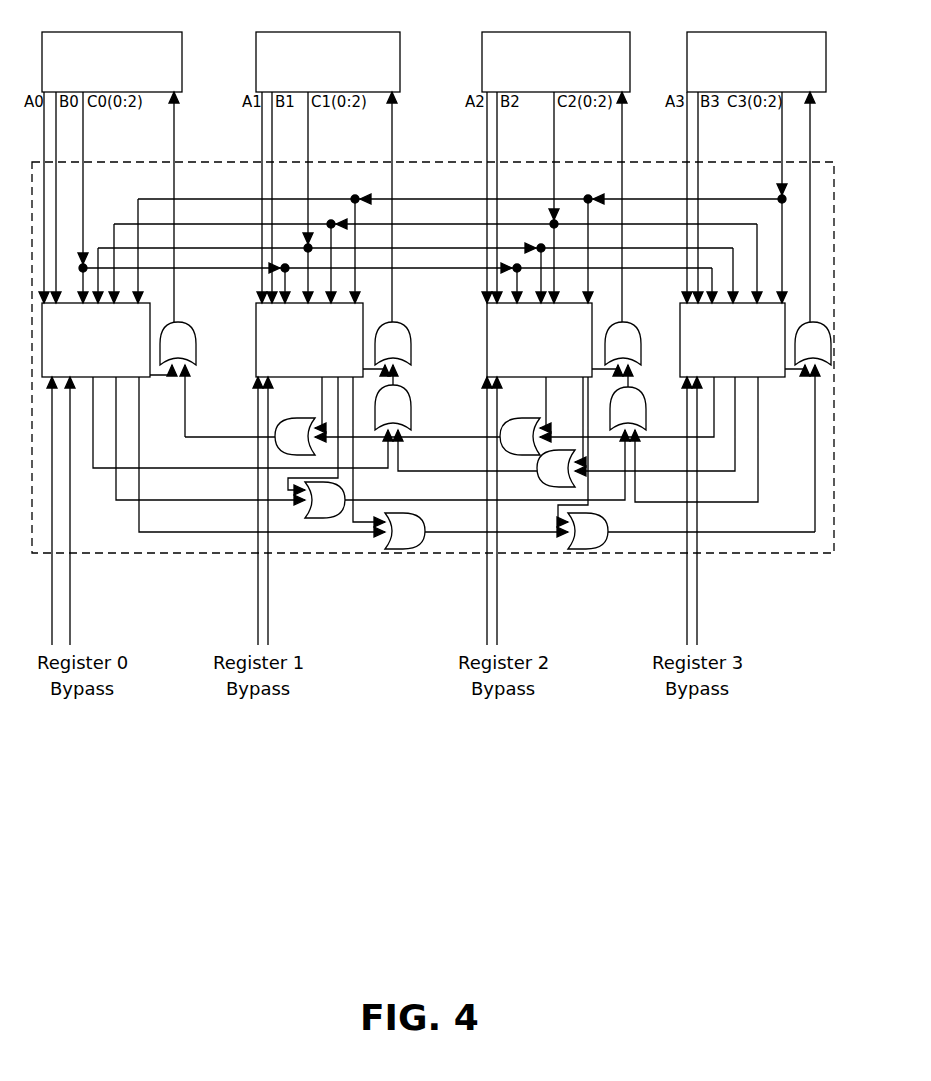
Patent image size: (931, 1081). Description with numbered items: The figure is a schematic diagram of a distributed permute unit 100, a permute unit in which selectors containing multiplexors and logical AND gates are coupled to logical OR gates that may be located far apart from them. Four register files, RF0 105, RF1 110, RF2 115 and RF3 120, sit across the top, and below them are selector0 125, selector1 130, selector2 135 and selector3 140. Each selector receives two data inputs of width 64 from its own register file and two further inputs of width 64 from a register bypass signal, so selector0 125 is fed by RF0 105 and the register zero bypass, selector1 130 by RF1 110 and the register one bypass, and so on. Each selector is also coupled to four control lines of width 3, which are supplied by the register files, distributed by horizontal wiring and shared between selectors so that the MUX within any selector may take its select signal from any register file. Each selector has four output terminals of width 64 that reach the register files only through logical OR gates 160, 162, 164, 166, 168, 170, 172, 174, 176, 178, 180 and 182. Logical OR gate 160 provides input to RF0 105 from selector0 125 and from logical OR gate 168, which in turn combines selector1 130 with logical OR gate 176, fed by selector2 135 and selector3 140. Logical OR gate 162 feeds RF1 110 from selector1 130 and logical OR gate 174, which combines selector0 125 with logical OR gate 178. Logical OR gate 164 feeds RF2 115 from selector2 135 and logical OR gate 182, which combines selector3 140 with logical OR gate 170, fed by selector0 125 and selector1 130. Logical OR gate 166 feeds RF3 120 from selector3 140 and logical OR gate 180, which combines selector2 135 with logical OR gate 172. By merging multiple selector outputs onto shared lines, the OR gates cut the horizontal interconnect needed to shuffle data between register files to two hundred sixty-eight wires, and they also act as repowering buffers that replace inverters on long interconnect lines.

The distributed permute unit 100 is at (440, 162).
The RF0 105 is at (112, 62).
The RF1 110 is at (328, 62).
The RF2 115 is at (556, 62).
The RF3 120 is at (756, 62).
The selector0 125 is at (96, 340).
The selector1 130 is at (309, 340).
The selector2 135 is at (539, 340).
The selector3 140 is at (732, 340).
The logical OR gate 160 is at (188, 322).
The logical OR gate 162 is at (403, 322).
The logical OR gate 164 is at (633, 322).
The logical OR gate 166 is at (827, 322).
The logical OR gate 168 is at (305, 418).
The logical OR gate 170 is at (328, 518).
The logical OR gate 172 is at (410, 549).
The logical OR gate 174 is at (404, 385).
The logical OR gate 176 is at (512, 455).
The logical OR gate 178 is at (552, 487).
The logical OR gate 180 is at (594, 549).
The logical OR gate 182 is at (619, 388).
The 64-bit signal width 64 is at (703, 594).
The 3-bit control line width 3 is at (781, 122).